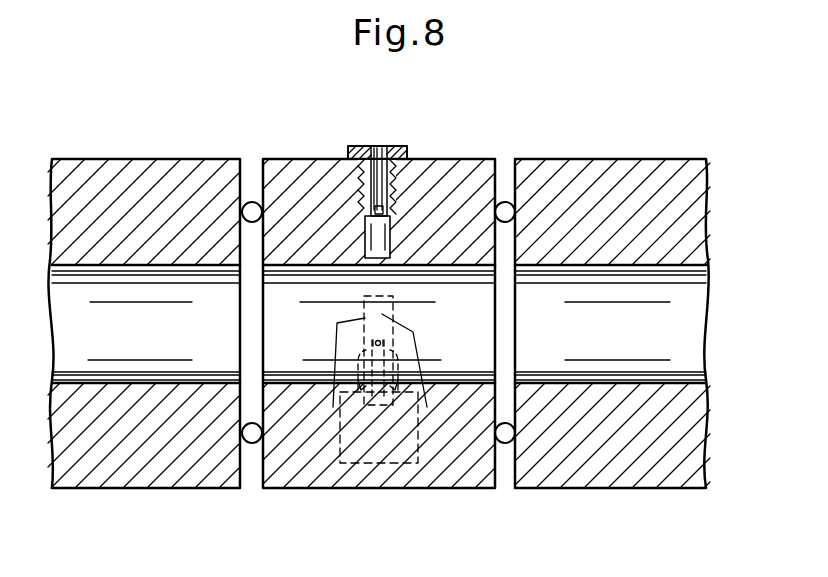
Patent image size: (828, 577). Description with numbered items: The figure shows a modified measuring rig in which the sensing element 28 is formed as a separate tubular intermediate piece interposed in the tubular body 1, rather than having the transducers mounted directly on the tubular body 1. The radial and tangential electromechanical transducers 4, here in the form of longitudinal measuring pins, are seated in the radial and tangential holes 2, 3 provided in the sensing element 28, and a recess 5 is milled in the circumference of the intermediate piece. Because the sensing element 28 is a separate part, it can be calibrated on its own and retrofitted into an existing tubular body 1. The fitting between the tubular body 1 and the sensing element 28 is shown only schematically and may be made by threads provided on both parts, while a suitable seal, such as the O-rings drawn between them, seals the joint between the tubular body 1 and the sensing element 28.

The tubular body 1 is at (120, 180).
The radial hole 2 is at (362, 229).
The tangential hole 3 is at (333, 407).
The electromechanical transducer 4 is at (437, 172).
The recess 5 is at (395, 443).
The sensing element 28 is at (485, 165).